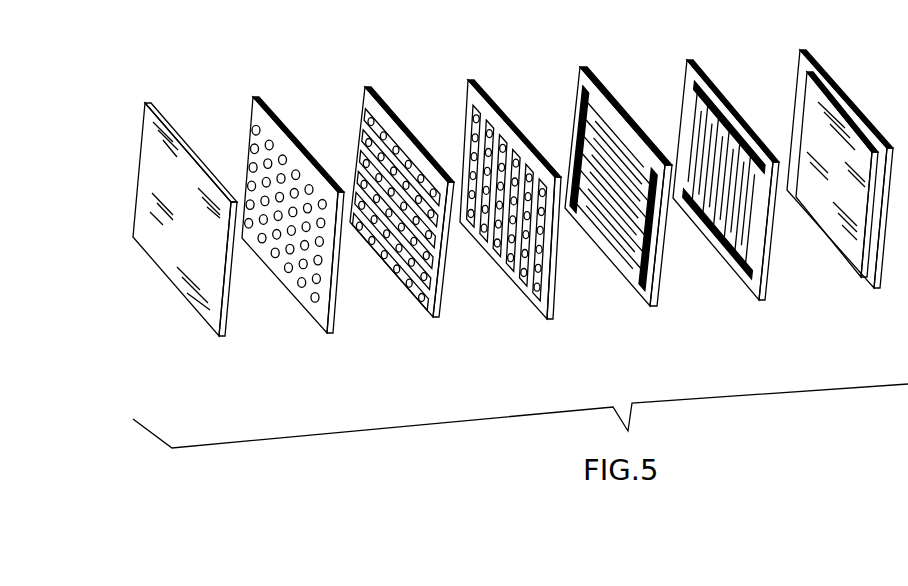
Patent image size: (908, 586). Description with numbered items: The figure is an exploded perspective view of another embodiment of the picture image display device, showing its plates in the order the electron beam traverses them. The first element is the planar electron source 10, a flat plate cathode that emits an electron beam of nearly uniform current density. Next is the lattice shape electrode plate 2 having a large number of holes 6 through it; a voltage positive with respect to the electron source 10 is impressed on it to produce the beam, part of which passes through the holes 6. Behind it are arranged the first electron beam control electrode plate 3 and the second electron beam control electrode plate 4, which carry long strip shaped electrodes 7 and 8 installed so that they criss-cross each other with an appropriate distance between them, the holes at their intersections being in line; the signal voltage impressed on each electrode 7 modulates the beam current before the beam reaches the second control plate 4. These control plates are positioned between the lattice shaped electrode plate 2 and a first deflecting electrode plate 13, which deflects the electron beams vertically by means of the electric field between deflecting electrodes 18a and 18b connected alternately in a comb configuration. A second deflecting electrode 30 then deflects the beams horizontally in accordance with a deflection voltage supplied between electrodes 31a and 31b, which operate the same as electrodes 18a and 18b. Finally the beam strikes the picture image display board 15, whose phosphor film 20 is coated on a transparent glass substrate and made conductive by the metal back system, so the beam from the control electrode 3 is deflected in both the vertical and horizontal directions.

The planar electron source 10 is at (212, 317).
The lattice shape electrode plate 2 is at (282, 225).
The holes 6 is at (262, 132).
The second electron beam control electrode plate 4 is at (387, 207).
The long strip shaped electrodes 8 is at (365, 112).
The first electron beam control electrode plate 3 is at (497, 199).
The long strip shaped electrodes 7 is at (470, 107).
The electron beam deflecting electrode plate 13 is at (615, 189).
The deflecting electrode 18a is at (583, 105).
The deflecting electrode 18b is at (648, 262).
The second deflecting electrode 30 is at (715, 180).
The electrode 31a is at (695, 83).
The electrode 31b is at (747, 263).
The picture image display board 15 is at (819, 169).
The phosphor film 20 is at (807, 97).